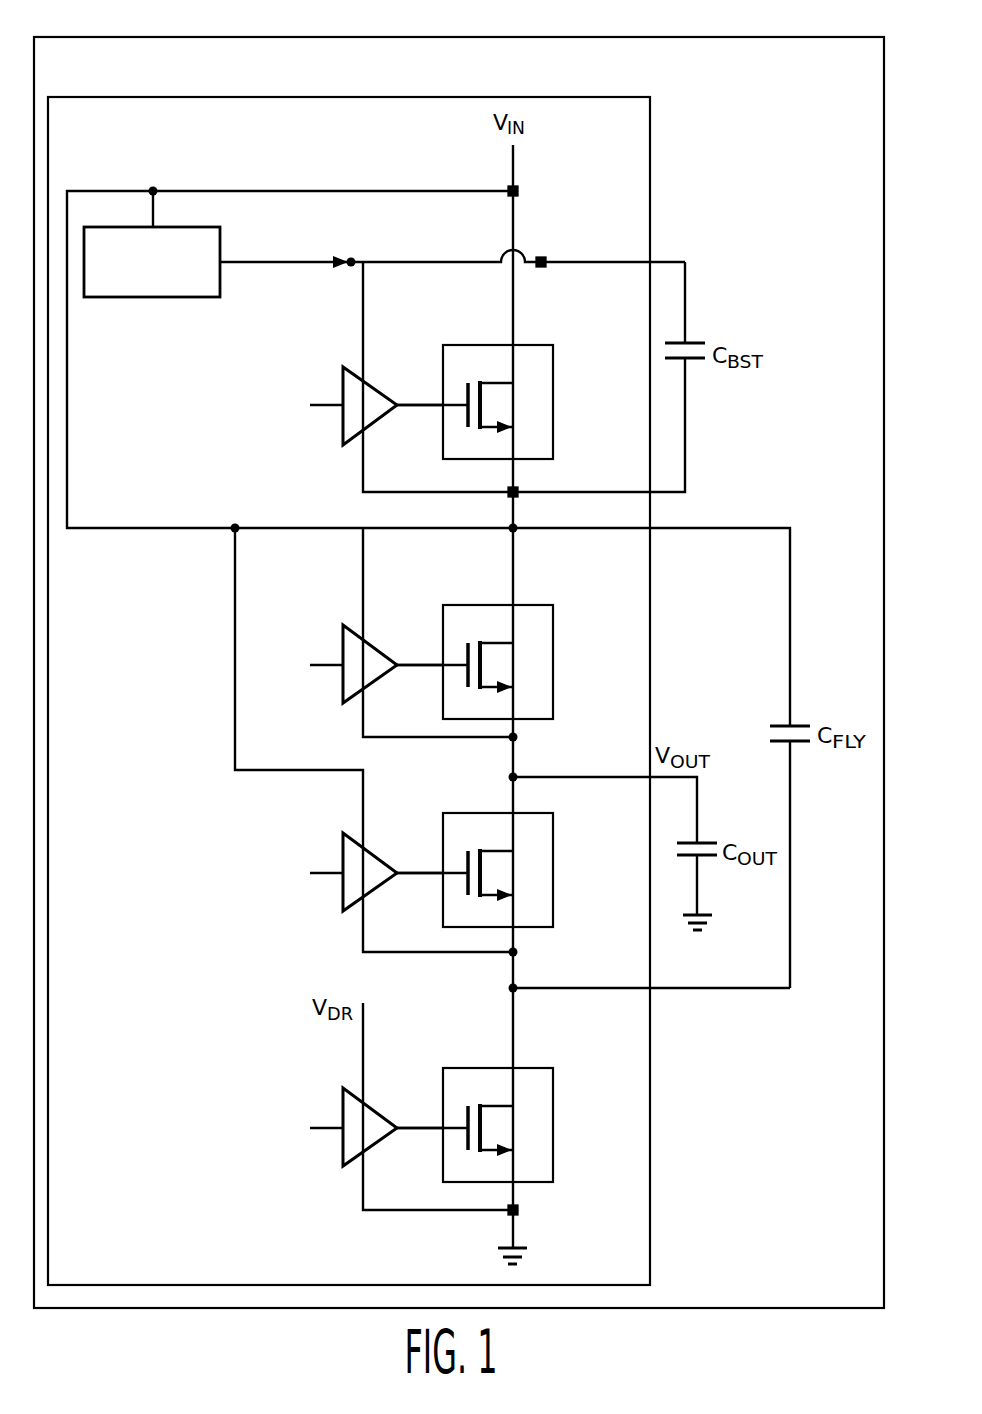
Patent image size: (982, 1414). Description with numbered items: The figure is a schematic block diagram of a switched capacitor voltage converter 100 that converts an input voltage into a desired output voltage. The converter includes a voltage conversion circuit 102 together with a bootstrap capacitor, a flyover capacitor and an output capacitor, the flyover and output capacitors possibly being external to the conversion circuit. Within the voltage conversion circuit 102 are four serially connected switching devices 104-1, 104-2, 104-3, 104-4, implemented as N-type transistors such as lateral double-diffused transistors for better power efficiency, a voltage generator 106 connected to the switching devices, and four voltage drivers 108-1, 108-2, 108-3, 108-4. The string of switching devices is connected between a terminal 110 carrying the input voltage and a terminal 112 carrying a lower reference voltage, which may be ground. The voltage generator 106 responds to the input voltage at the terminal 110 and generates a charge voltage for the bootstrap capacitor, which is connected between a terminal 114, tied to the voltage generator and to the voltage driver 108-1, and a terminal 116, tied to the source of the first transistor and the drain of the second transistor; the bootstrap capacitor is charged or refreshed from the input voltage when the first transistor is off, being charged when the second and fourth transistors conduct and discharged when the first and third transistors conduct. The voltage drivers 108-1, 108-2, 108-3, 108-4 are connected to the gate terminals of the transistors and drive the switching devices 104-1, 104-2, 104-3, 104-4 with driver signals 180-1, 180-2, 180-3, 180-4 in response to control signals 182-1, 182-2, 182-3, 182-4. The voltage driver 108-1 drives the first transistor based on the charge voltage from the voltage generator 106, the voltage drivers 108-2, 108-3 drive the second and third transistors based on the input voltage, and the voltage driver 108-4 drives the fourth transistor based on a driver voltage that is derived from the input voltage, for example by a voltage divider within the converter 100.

The switched capacitor voltage converter 100 is at (804, 37).
The voltage conversion circuit 102 is at (650, 128).
The switching device 104-1 is at (553, 382).
The switching device 104-2 is at (553, 623).
The switching device 104-3 is at (553, 913).
The switching device 104-4 is at (553, 1082).
The voltage generator 106 is at (143, 297).
The voltage driver 108-1 is at (342, 427).
The voltage driver 108-2 is at (342, 693).
The voltage driver 108-3 is at (342, 903).
The voltage driver 108-4 is at (342, 1160).
The terminal 110 is at (518, 188).
The terminal 112 is at (519, 1210).
The terminal 114 is at (546, 258).
The terminal 116 is at (516, 490).
The driver signal 180-1 is at (383, 395).
The driver signal 180-2 is at (414, 665).
The driver signal 180-3 is at (413, 873).
The driver signal 180-4 is at (410, 1128).
The control signal 182-1 is at (327, 405).
The control signal 182-2 is at (318, 665).
The control signal 182-3 is at (325, 873).
The control signal 182-4 is at (318, 1128).